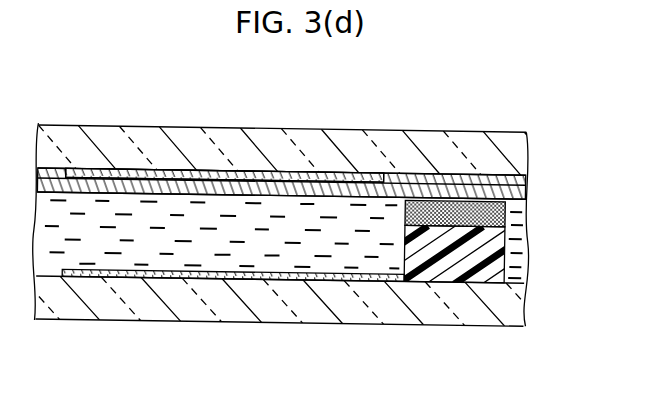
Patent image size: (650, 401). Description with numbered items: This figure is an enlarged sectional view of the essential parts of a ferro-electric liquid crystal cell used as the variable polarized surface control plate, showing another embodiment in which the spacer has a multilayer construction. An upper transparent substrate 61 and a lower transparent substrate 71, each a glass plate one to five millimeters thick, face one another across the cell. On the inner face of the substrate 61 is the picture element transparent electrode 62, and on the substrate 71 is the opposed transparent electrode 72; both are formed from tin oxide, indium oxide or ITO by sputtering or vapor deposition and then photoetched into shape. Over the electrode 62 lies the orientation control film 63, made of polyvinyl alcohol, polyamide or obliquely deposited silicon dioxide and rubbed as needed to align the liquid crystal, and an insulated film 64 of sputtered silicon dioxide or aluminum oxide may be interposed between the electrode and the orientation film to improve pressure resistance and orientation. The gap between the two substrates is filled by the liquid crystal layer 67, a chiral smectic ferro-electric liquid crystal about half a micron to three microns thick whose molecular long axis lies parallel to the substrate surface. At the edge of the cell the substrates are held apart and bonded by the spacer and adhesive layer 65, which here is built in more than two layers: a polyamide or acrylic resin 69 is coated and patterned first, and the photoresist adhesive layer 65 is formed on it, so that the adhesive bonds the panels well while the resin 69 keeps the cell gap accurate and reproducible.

The substrate 61 is at (105, 148).
The transparent electrode 62 is at (210, 166).
The orientation control film 63 is at (370, 178).
The insulated film 64 is at (290, 172).
The spacer and adhesive layer 65 is at (506, 209).
The liquid crystal layer 67 is at (180, 245).
The polyamide or acrylic resin 69 is at (440, 265).
The substrate 71 is at (233, 303).
The transparent electrode 72 is at (112, 279).